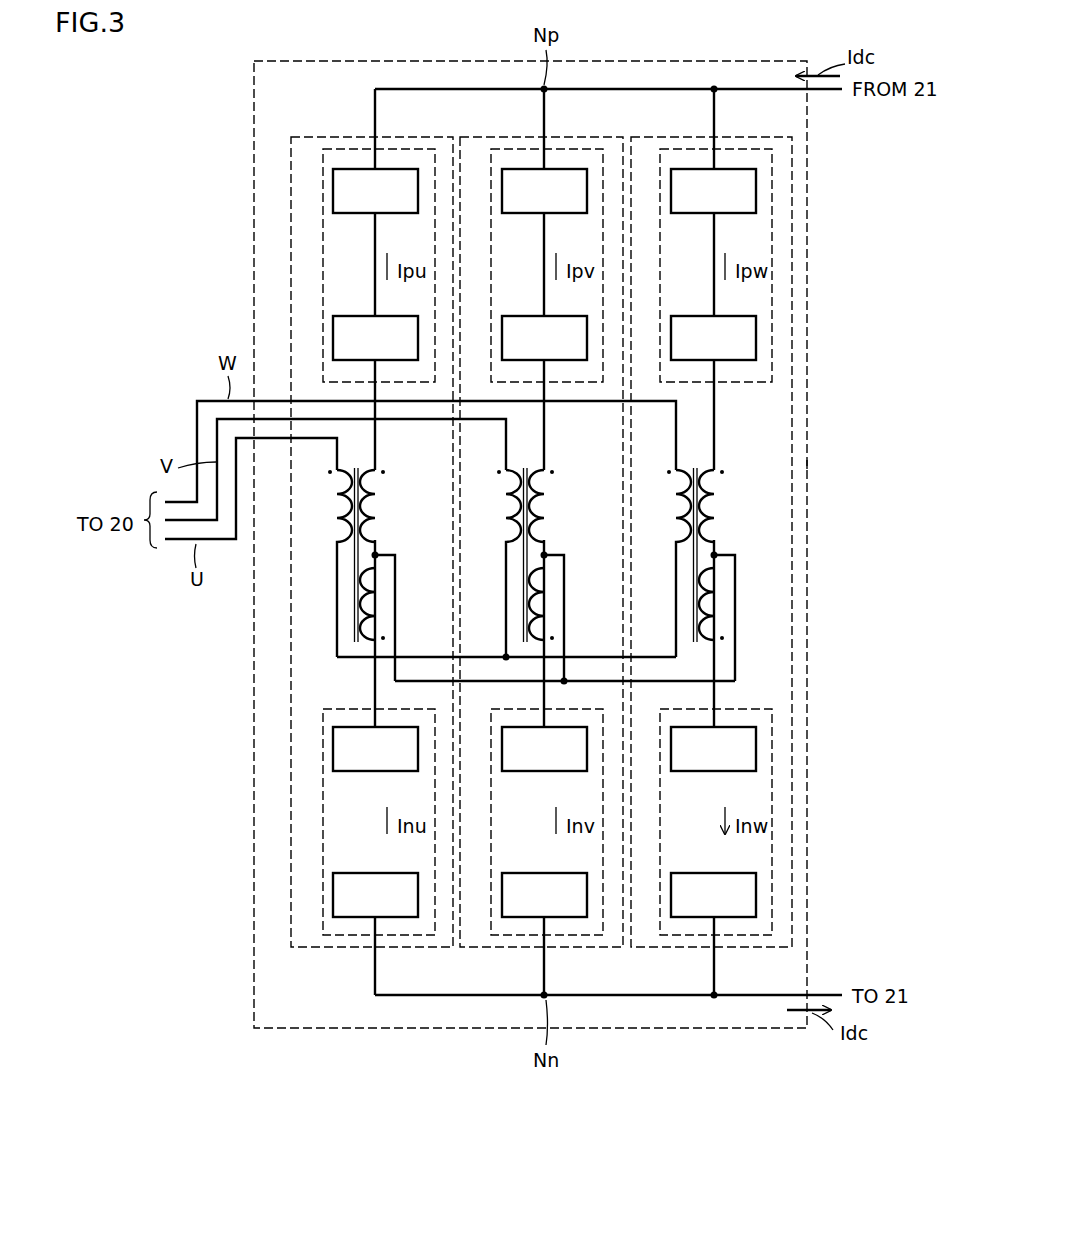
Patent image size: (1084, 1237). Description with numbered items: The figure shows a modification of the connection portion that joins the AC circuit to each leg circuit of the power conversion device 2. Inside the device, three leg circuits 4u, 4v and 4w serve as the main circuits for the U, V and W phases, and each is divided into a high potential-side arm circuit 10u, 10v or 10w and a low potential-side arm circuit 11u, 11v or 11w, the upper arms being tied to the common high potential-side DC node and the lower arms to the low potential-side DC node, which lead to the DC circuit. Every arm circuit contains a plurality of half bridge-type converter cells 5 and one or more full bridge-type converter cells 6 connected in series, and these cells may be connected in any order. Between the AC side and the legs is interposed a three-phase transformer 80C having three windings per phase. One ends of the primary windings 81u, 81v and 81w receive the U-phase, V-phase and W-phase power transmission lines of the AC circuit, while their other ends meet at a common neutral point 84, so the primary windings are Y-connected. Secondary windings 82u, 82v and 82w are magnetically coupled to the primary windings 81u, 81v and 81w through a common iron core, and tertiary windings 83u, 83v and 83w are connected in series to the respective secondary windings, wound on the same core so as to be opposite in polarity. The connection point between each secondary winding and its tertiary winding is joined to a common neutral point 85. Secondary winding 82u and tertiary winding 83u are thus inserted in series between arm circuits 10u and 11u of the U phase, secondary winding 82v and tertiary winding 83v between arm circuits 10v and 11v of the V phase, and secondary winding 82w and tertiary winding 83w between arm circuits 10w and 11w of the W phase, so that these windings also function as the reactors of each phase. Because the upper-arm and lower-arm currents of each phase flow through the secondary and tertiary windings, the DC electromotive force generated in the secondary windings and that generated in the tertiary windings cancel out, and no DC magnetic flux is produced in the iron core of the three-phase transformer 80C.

The power conversion device 2 is at (758, 60).
The U-phase leg circuit 4u is at (415, 137).
The V-phase leg circuit 4v is at (584, 137).
The W-phase leg circuit 4w is at (753, 137).
The half bridge-type converter cell 5 is at (333, 190).
The full bridge-type converter cell 6 is at (333, 338).
The U-phase high potential-side arm circuit 10u is at (343, 147).
The V-phase high potential-side arm circuit 10v is at (508, 147).
The W-phase high potential-side arm circuit 10w is at (678, 147).
The U-phase low potential-side arm circuit 11u is at (343, 937).
The V-phase low potential-side arm circuit 11v is at (509, 937).
The W-phase low potential-side arm circuit 11w is at (679, 937).
The U-phase primary winding 81u is at (345, 503).
The V-phase primary winding 81v is at (514, 503).
The W-phase primary winding 81w is at (684, 503).
The U-phase secondary winding 82u is at (377, 503).
The V-phase secondary winding 82v is at (546, 503).
The W-phase secondary winding 82w is at (716, 503).
The U-phase tertiary winding 83u is at (368, 600).
The V-phase tertiary winding 83v is at (537, 600).
The W-phase tertiary winding 83w is at (707, 600).
The common neutral point 84 is at (505, 660).
The second connection line 85 is at (565, 684).
The three-phase transformer 80C is at (832, 476).